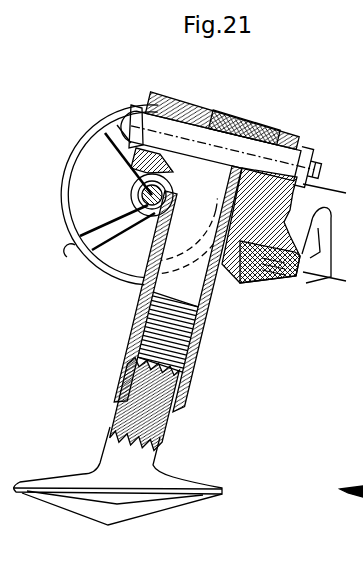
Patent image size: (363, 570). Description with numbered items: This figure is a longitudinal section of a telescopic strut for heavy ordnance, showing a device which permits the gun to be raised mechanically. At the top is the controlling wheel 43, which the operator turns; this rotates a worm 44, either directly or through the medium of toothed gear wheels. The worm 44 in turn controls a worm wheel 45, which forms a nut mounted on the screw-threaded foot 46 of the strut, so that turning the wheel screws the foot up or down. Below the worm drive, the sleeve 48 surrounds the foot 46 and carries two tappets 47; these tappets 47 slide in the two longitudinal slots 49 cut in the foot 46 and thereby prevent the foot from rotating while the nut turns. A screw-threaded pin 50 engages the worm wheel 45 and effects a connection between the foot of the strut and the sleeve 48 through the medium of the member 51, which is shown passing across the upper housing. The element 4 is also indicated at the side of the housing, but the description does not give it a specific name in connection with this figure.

The wall 4 is at (324, 233).
The controlling wheel 43 is at (79, 238).
The worm 44 is at (138, 191).
The worm wheel 45 is at (264, 274).
The foot 46 is at (186, 330).
The tappets 47 is at (115, 388).
The sleeve 48 is at (136, 312).
The longitudinal slots 49 is at (112, 423).
The screw-threaded pin 50 is at (133, 172).
The member 51 is at (258, 124).